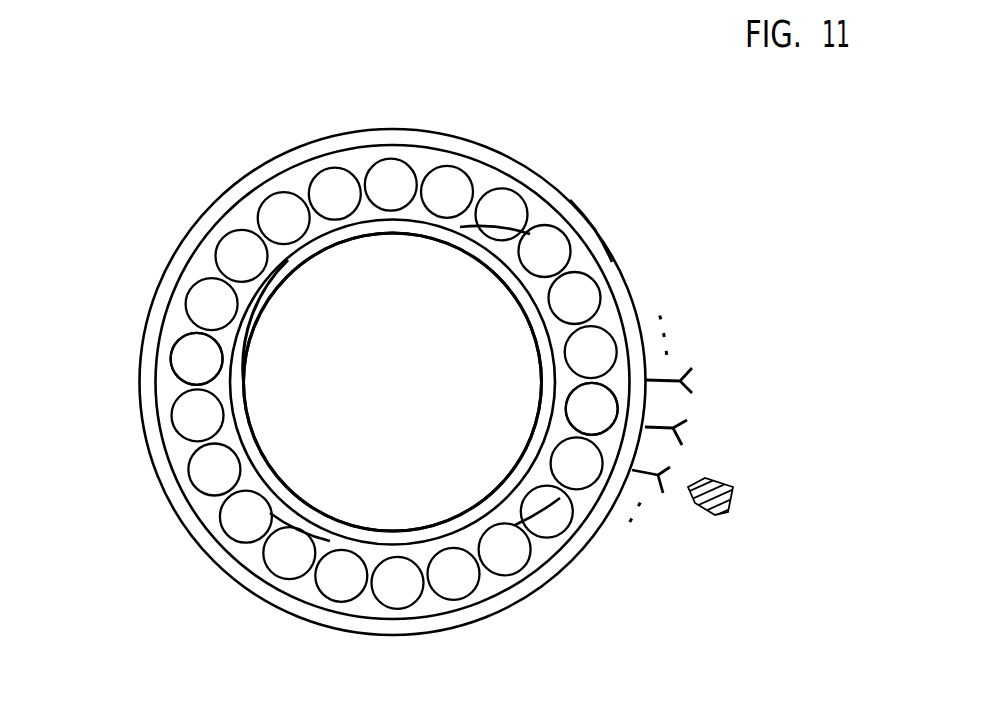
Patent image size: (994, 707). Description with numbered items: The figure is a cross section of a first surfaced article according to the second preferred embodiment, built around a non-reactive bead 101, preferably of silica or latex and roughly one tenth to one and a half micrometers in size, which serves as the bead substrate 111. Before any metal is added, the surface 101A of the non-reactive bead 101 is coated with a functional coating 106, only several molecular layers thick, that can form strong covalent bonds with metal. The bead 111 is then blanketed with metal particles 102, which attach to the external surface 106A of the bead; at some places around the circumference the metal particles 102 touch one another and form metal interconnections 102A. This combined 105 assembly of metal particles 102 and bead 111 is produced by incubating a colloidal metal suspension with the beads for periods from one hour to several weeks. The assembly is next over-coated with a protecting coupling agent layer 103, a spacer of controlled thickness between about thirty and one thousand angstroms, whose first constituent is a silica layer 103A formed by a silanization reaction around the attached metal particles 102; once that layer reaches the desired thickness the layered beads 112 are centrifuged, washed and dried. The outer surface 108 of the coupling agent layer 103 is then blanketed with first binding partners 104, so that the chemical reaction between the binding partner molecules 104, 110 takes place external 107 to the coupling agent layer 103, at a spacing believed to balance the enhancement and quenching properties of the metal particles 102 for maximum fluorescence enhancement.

The non-reactive beads 101 is at (470, 300).
The surface of the non-reactive beads 101A is at (282, 273).
The metal particles 102 is at (389, 183).
The metal interconnections 102A is at (185, 333).
The coupling agent layer 103 is at (363, 108).
The silica layer 103A is at (572, 258).
The first binding partners 104 is at (693, 383).
The combined metal particles and beads 105 is at (553, 547).
The functional coating 106 is at (543, 333).
The external surface of the beads 106A is at (493, 250).
The external region 107 is at (727, 431).
The outer ring outer surface 108 is at (593, 232).
The binding partner molecules 110 is at (723, 497).
The bead substrates 111 is at (303, 523).
The layered beads 112 is at (497, 168).